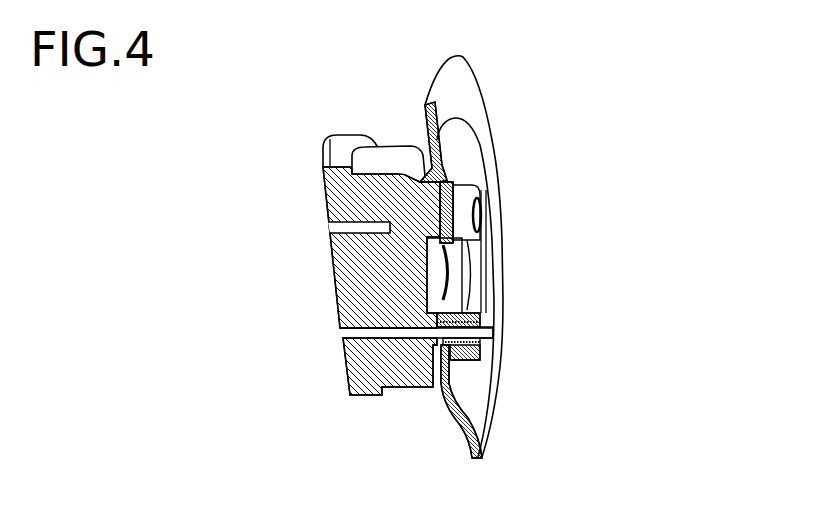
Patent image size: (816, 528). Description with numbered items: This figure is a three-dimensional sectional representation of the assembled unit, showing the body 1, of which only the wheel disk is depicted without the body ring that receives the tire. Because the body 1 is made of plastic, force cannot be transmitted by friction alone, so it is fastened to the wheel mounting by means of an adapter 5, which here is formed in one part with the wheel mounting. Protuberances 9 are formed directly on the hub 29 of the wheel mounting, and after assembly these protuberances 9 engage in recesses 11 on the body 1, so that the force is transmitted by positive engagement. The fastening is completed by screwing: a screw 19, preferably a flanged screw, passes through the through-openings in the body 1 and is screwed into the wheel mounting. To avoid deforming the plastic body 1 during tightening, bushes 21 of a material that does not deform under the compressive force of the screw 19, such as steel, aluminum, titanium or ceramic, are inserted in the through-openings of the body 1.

The body 1 is at (474, 93).
The adapter 5 is at (433, 390).
The protuberances 9 is at (447, 197).
The recesses 11 is at (463, 236).
The screw 19 is at (490, 340).
The bushes 21 is at (480, 321).
The hub 29 is at (335, 196).